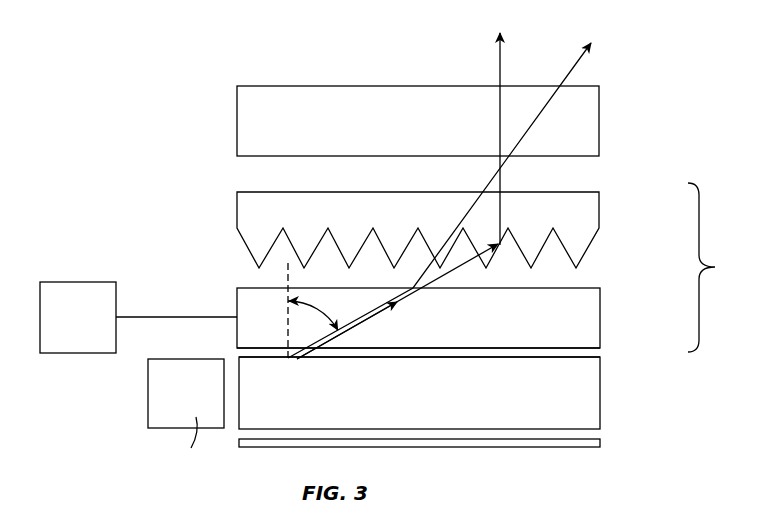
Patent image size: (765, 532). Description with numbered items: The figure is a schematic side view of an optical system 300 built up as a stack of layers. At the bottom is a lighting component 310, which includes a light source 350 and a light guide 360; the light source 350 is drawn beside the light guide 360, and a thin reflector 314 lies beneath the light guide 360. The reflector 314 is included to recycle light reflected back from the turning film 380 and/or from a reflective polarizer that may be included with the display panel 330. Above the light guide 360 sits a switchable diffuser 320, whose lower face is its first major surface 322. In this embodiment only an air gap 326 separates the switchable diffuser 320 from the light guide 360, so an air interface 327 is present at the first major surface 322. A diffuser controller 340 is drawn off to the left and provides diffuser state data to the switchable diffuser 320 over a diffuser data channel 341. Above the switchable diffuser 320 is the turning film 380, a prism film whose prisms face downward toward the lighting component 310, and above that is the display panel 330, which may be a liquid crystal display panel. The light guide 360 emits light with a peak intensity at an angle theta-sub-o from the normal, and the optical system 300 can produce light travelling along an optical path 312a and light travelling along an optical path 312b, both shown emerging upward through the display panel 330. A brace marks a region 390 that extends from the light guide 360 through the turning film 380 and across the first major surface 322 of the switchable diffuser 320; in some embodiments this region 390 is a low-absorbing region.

The optical system 300 is at (135, 85).
The lighting component 310 is at (262, 419).
The optical path 312a is at (498, 68).
The optical path 312b is at (575, 67).
The reflector 314 is at (600, 443).
The switchable diffuser 320 is at (580, 305).
The first major surface 322 is at (575, 345).
The air gap 326 is at (540, 350).
The air interface 327 is at (590, 352).
The display panel 330 is at (587, 120).
The diffuser controller 340 is at (78, 282).
The diffuser data channel 341 is at (168, 317).
The light source 350 is at (162, 398).
The light guide 360 is at (590, 410).
The turning film 380 is at (590, 212).
The region 390 is at (723, 267).